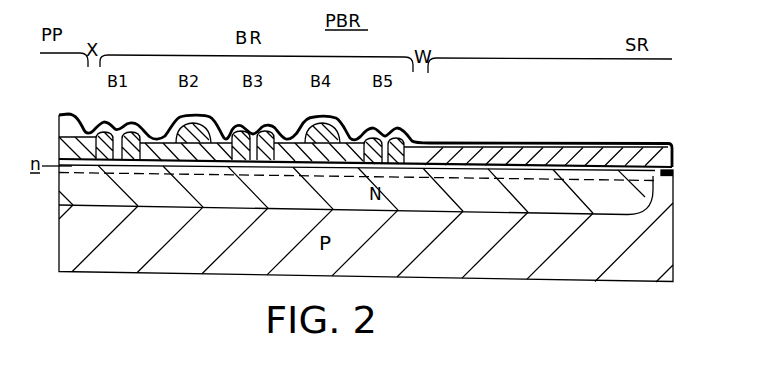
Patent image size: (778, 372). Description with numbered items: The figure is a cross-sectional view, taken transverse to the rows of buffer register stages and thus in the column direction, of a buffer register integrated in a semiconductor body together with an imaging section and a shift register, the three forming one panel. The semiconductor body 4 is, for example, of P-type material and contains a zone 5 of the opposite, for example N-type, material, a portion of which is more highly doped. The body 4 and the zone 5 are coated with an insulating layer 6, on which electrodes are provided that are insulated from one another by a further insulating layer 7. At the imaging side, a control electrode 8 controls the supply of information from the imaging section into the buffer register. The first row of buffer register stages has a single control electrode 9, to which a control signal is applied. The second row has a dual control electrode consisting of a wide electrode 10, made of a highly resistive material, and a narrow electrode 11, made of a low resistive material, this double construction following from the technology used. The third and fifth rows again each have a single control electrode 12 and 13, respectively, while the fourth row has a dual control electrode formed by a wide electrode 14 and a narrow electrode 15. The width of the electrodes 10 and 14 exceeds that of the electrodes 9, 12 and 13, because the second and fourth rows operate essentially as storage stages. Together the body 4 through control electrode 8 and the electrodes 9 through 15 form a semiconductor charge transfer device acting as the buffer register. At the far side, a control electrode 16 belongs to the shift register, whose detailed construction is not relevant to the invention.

The semiconductor body 4 is at (661, 242).
The zone 5 is at (74, 186).
The insulating layer 6 is at (675, 173).
The insulating layer 7 is at (112, 127).
The control electrode 8 is at (75, 148).
The control electrode 9 is at (131, 131).
The wide electrode 10 is at (208, 148).
The narrow electrode 11 is at (180, 120).
The control electrode 12 is at (253, 130).
The control electrode 13 is at (390, 142).
The wide electrode 14 is at (353, 150).
The narrow electrode 15 is at (312, 128).
The control electrode 16 is at (538, 152).